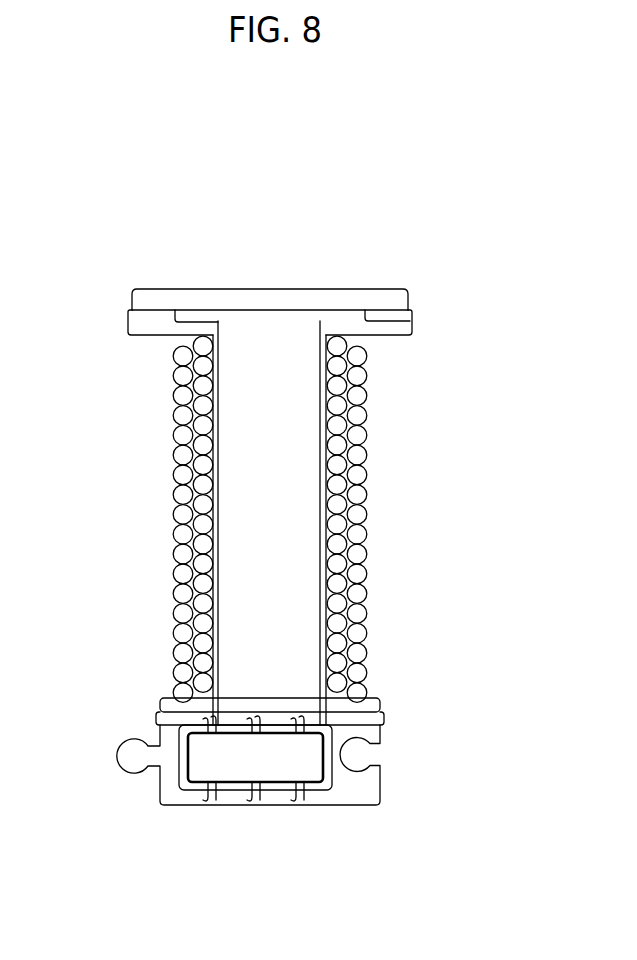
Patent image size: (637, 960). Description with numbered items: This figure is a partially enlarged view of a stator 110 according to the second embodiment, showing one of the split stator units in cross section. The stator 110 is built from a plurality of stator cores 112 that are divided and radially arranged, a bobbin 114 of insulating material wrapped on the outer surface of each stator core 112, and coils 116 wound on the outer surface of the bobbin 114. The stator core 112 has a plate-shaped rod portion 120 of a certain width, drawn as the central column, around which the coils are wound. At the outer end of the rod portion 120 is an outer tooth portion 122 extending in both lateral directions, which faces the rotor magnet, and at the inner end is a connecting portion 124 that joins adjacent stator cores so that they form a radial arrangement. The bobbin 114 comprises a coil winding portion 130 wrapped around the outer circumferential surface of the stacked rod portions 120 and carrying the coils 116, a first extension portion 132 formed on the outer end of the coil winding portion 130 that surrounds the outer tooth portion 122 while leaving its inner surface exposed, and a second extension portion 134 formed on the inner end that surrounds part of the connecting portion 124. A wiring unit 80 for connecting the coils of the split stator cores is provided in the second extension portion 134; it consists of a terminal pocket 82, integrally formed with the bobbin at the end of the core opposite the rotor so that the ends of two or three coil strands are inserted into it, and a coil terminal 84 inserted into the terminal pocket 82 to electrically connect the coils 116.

The stator 110 is at (110, 188).
The stator core 112 is at (213, 480).
The bobbin 114 is at (212, 392).
The coils 116 is at (358, 650).
The rod portion 120 is at (283, 517).
The outer tooth portion 122 is at (336, 296).
The connecting portion 124 is at (171, 783).
The coil winding portion 130 is at (333, 568).
The first extension portion 132 is at (413, 322).
The second extension portion 134 is at (170, 699).
The wiring unit 80 is at (265, 823).
The terminal pocket 82 is at (322, 781).
The coil terminal 84 is at (275, 767).